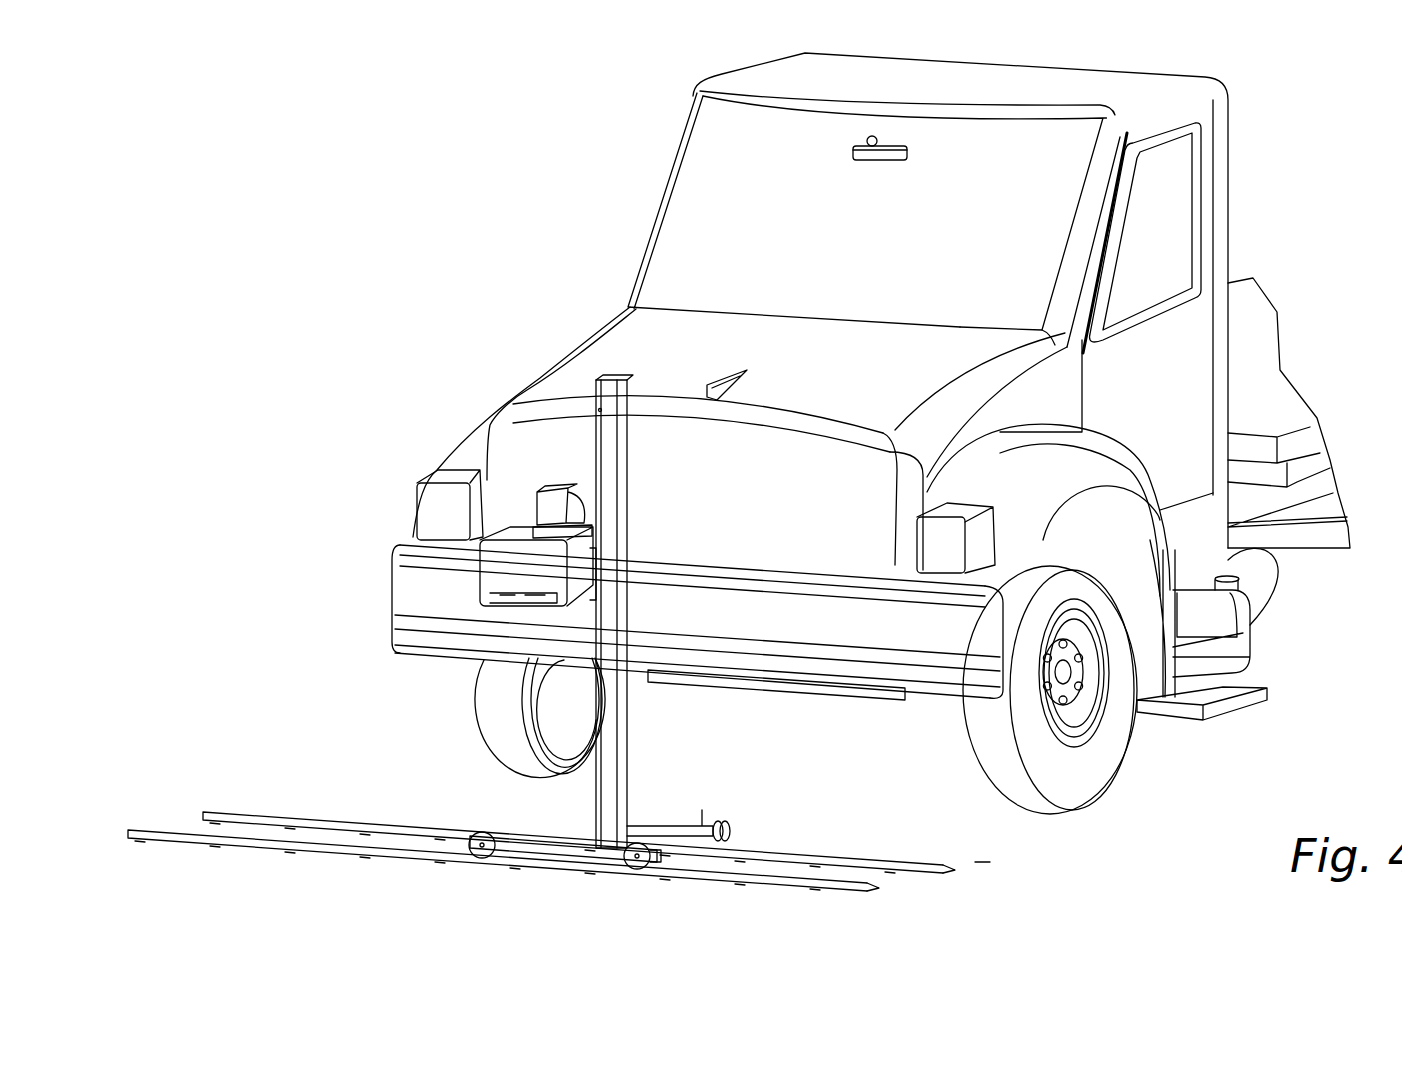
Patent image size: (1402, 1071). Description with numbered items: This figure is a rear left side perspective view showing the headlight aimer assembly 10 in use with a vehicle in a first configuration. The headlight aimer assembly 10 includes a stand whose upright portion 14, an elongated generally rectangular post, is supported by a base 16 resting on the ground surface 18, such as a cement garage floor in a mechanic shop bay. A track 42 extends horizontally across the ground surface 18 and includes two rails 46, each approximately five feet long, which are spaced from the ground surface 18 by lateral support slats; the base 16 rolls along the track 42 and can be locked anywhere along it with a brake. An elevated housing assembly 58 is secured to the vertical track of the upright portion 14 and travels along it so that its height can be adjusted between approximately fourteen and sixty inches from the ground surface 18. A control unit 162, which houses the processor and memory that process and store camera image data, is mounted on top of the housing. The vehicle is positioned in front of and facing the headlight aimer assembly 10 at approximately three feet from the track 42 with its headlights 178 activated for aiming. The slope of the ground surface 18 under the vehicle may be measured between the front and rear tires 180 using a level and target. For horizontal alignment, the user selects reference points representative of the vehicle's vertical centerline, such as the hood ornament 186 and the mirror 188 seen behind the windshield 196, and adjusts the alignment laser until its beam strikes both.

The headlight aimer assembly 10 is at (541, 649).
The upright portion 14 is at (620, 780).
The base 16 is at (548, 852).
The ground surface 18 is at (975, 860).
The track 42 is at (758, 852).
The rails 46 is at (885, 855).
The housing assembly 58 is at (482, 588).
The control unit 162 is at (538, 478).
The headlights 178 is at (432, 500).
The tires 180 is at (497, 703).
The hood ornament 186 is at (713, 383).
The mirror 188 is at (853, 150).
The windshield 196 is at (693, 233).